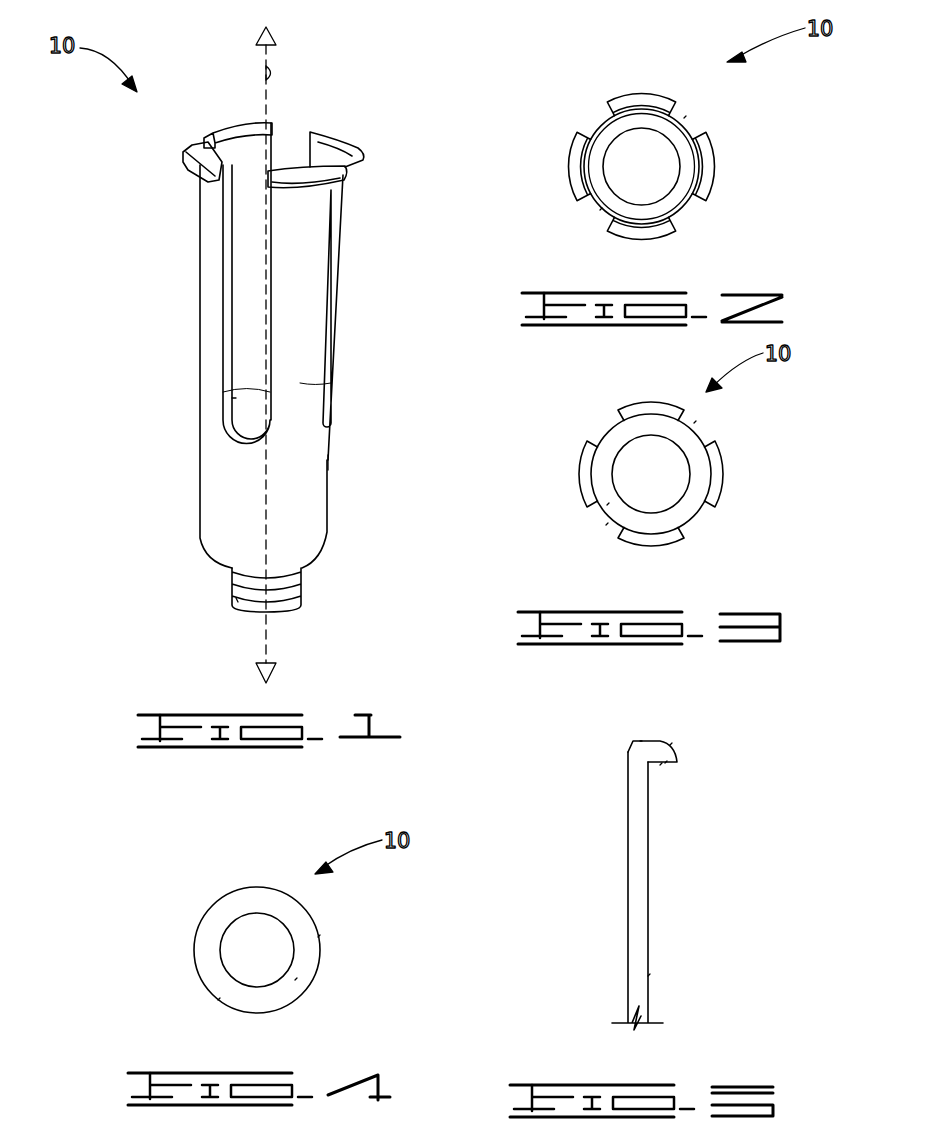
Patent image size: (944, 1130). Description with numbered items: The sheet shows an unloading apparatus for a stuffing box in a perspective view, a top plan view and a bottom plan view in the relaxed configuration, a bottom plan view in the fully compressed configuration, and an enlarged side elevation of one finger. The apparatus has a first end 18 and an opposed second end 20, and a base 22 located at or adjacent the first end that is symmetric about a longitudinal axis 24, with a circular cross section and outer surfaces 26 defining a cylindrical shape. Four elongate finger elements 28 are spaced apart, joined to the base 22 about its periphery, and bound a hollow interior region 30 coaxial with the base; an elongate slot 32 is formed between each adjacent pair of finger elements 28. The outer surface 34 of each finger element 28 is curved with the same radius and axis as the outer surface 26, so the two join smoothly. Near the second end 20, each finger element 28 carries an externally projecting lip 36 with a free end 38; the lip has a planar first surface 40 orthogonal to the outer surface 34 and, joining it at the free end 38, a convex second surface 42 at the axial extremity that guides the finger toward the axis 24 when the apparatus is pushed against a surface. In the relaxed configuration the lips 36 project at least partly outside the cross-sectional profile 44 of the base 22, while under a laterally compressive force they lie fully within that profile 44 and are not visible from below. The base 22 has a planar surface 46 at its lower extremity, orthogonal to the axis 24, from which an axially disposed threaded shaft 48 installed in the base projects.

In FIG. 1, the first end 18 is at (237, 600).
In FIG. 1, the second end 20 is at (275, 130).
In FIG. 5, the second end 20 is at (640, 741).
In FIG. 1, the base 22 is at (203, 515).
In FIG. 2, the base 22 is at (672, 200).
In FIG. 3, the base 22 is at (688, 510).
In FIG. 4, the base 22 is at (238, 907).
In FIG. 1, the longitudinal axis 24 is at (262, 72).
In FIG. 1, the outer surfaces 26 is at (330, 465).
In FIG. 2, the outer surfaces 26 is at (684, 118).
In FIG. 3, the outer surfaces 26 is at (694, 423).
In FIG. 4, the outer surfaces 26 is at (318, 937).
In FIG. 1, the finger elements 28 is at (200, 318).
In FIG. 5, the finger elements 28 is at (628, 932).
In FIG. 1, the hollow interior region 30 is at (247, 265).
In FIG. 2, the hollow interior region 30 is at (625, 150).
In FIG. 1, the elongate slot 32 is at (232, 398).
In FIG. 2, the elongate slot 32 is at (600, 210).
In FIG. 1, the outer surface 34 is at (300, 383).
In FIG. 5, the outer surface 34 is at (648, 976).
In FIG. 1, the lip 36 is at (215, 133).
In FIG. 2, the lip 36 is at (643, 92).
In FIG. 3, the lip 36 is at (645, 405).
In FIG. 5, the lip 36 is at (632, 752).
In FIG. 5, the free end 38 is at (665, 763).
In FIG. 5, the first surface 40 is at (660, 765).
In FIG. 5, the second surface 42 is at (670, 745).
In FIG. 3, the cross-sectional profile 44 is at (606, 525).
In FIG. 4, the cross-sectional profile 44 is at (218, 1000).
In FIG. 3, the planar surface 46 is at (607, 505).
In FIG. 4, the planar surface 46 is at (295, 980).
In FIG. 1, the threaded shaft 48 is at (302, 578).
In FIG. 3, the threaded shaft 48 is at (632, 460).
In FIG. 4, the threaded shaft 48 is at (235, 955).